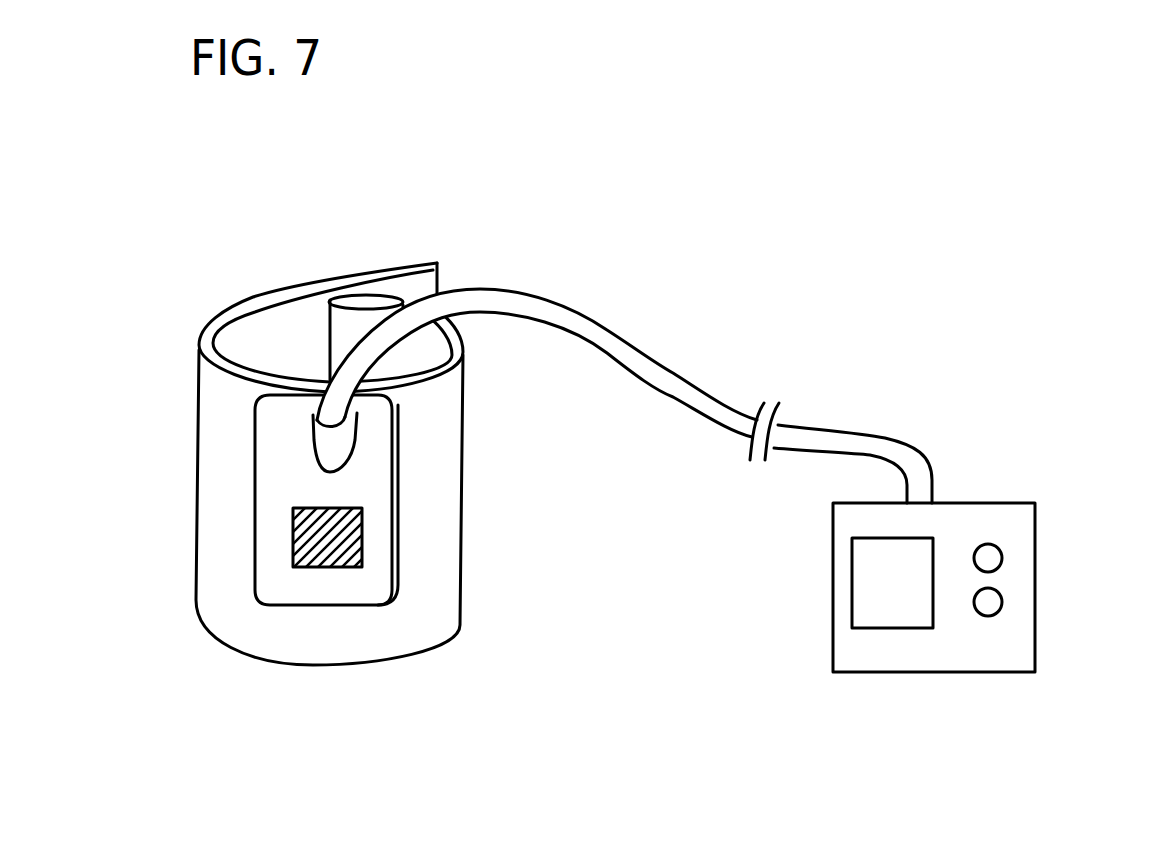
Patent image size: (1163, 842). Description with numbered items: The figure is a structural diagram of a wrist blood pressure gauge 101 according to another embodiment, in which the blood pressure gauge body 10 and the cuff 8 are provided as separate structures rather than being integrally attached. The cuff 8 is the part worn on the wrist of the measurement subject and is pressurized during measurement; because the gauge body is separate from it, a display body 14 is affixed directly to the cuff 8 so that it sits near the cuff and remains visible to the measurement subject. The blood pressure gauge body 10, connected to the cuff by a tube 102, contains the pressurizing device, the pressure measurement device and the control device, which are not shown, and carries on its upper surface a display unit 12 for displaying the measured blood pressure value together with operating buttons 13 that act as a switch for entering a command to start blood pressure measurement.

The wrist blood pressure gauge 101 is at (533, 211).
The cuff 8 is at (255, 297).
The display body 14 is at (328, 553).
The air tube 102 is at (670, 372).
The blood pressure gauge body 10 is at (993, 503).
The display unit 12 is at (888, 613).
The operating buttons 13 is at (993, 558).